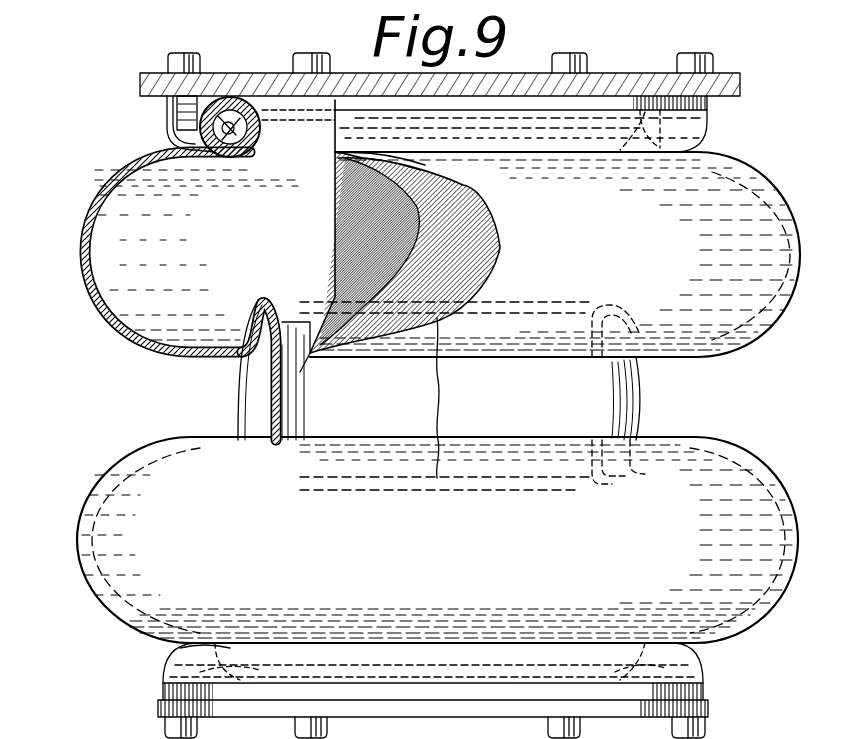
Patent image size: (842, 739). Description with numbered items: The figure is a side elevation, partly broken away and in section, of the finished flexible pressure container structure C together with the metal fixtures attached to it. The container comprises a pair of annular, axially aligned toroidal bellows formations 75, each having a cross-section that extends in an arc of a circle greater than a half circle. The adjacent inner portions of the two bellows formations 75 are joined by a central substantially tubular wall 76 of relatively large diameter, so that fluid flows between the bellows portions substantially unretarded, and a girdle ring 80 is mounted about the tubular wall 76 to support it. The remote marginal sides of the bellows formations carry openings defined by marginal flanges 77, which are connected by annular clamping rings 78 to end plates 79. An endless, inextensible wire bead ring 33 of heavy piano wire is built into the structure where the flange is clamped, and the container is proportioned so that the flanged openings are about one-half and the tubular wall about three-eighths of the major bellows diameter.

The bead ring 33 is at (182, 132).
The toroidal bellows formation 75 is at (84, 248).
The central tubular wall 76 is at (278, 383).
The marginal flange 77 is at (172, 667).
The annular clamping ring 78 is at (707, 128).
The end plate 79 is at (742, 96).
The girdle ring 80 is at (268, 358).
The container structure C is at (142, 353).